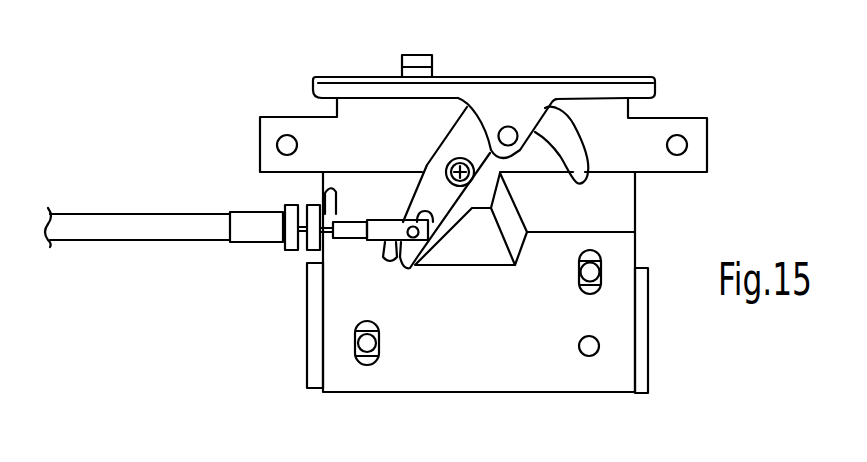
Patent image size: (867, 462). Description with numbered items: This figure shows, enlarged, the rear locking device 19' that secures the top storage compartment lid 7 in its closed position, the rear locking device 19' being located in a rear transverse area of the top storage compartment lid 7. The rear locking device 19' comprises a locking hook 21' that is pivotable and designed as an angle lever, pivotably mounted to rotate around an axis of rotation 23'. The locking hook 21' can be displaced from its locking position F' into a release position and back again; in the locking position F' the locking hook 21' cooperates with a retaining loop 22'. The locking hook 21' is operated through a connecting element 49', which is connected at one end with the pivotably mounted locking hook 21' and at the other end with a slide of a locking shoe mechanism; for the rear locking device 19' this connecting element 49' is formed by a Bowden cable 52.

The top storage compartment lid 7 is at (484, 60).
The locking hook 21' is at (439, 138).
The retaining loop 22' is at (508, 84).
The axis of rotation 23' is at (427, 149).
The rear locking device 19' is at (558, 169).
The locking position F' is at (618, 68).
The Bowden cable 52 is at (194, 230).
The connecting element 49' is at (137, 280).